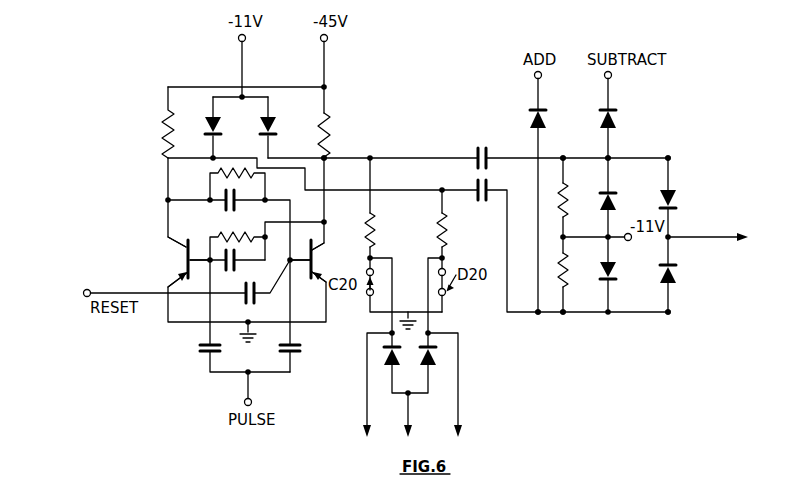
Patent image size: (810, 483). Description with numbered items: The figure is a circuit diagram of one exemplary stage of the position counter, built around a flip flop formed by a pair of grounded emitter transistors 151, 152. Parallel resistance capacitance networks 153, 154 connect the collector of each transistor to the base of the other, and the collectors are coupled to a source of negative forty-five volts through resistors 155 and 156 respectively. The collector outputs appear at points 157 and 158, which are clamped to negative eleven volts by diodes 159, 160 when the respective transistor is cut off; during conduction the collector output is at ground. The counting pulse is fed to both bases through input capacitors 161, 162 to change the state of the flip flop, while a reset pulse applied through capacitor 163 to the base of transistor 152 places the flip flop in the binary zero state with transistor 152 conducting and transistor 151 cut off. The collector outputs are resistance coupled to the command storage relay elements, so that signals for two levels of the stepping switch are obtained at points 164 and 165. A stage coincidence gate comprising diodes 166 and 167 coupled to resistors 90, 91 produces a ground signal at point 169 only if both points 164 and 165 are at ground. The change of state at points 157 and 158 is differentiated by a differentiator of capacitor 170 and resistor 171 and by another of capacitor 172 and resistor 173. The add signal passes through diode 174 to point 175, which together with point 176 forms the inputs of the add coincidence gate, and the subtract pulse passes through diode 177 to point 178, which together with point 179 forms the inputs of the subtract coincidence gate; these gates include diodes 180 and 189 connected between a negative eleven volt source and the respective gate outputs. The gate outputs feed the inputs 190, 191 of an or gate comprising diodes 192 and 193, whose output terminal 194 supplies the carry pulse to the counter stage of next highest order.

The resistor 90 is at (373, 231).
The resistor 91 is at (445, 231).
The grounded emitter transistor 151 is at (180, 258).
The grounded emitter transistor 152 is at (318, 256).
The parallel resistance capacitance network 153 is at (218, 175).
The parallel resistance capacitance network 154 is at (235, 235).
The resistor 155 is at (164, 121).
The resistor 156 is at (331, 121).
The collector output point 157 is at (216, 158).
The collector output point 158 is at (327, 157).
The diode 159 is at (210, 117).
The diode 160 is at (273, 120).
The input capacitor 161 is at (200, 346).
The input capacitor 162 is at (300, 346).
The capacitor 163 is at (260, 278).
The point 164 is at (388, 333).
The point 165 is at (432, 333).
The diode 166 is at (383, 355).
The diode 167 is at (437, 357).
The point 169 is at (410, 395).
The capacitor 170 is at (486, 148).
The resistor 171 is at (566, 198).
The capacitor 172 is at (488, 187).
The resistor 173 is at (567, 278).
The diode 174 is at (545, 118).
The point 175 is at (538, 314).
The point 176 is at (564, 314).
The diode 177 is at (617, 113).
The point 178 is at (610, 158).
The point 179 is at (564, 157).
The diode 180 is at (615, 268).
The diode 189 is at (617, 193).
The or gate input 190 is at (672, 158).
The or gate input 191 is at (670, 313).
The diode 192 is at (678, 193).
The diode 193 is at (677, 275).
The output terminal 194 is at (672, 237).